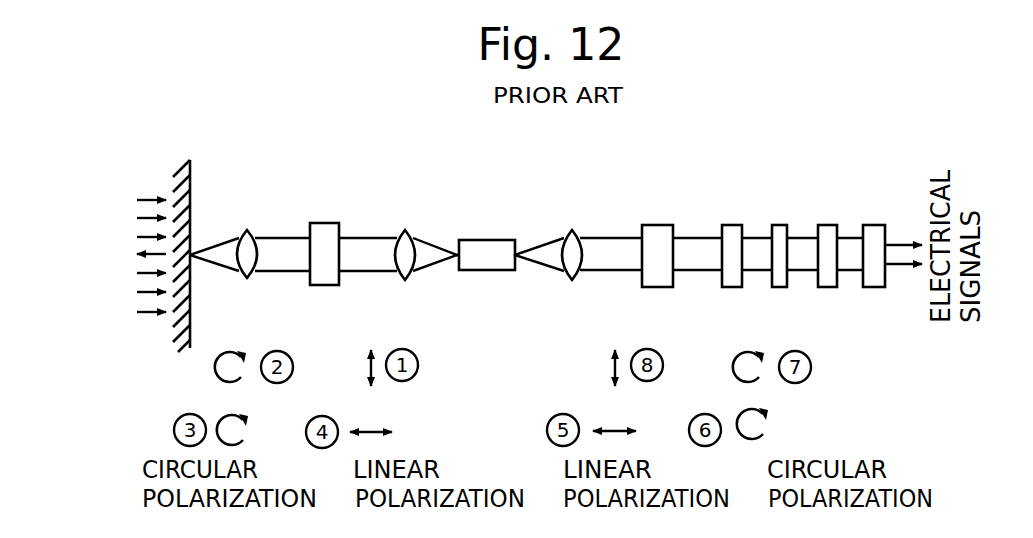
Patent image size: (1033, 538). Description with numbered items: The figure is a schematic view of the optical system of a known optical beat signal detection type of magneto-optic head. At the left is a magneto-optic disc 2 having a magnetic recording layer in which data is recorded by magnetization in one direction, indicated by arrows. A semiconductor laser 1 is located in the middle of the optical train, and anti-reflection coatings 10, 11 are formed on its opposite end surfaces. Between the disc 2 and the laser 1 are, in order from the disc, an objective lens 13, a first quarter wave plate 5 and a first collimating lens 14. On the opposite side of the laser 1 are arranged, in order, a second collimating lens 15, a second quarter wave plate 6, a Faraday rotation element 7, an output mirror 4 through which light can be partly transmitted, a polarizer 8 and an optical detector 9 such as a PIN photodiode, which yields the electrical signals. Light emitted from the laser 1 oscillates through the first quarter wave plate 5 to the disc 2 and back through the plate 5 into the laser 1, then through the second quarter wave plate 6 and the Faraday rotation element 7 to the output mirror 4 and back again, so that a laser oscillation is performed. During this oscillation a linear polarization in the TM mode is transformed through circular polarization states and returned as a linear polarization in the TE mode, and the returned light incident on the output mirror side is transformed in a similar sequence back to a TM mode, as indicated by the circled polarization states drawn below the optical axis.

The semiconductor laser 1 is at (488, 240).
The magneto-optic disc 2 is at (190, 172).
The output mirror 4 is at (780, 225).
The first quarter wave plate 5 is at (325, 223).
The second quarter wave plate 6 is at (657, 225).
The Faraday rotation element 7 is at (730, 225).
The polarizer 8 is at (828, 225).
The optical detector 9 is at (876, 225).
The anti-reflection coating 10 is at (457, 253).
The anti-reflection coating 11 is at (516, 252).
The objective lens 13 is at (245, 228).
The first collimating lens 14 is at (405, 230).
The second collimating lens 15 is at (572, 230).